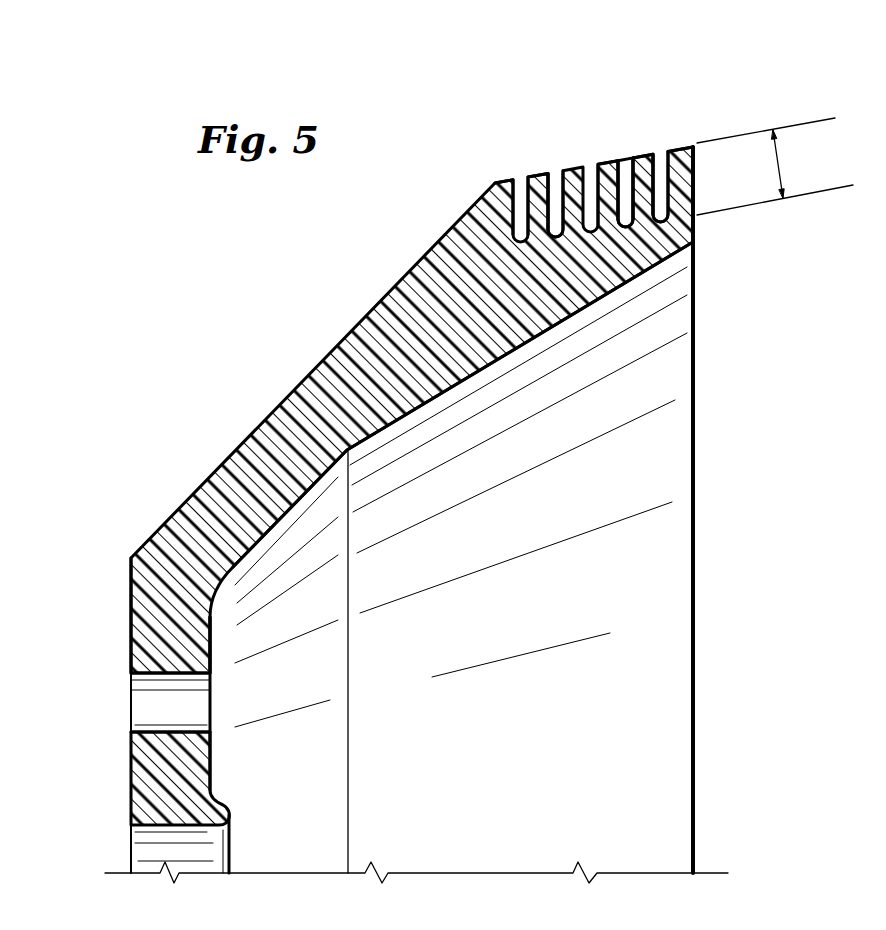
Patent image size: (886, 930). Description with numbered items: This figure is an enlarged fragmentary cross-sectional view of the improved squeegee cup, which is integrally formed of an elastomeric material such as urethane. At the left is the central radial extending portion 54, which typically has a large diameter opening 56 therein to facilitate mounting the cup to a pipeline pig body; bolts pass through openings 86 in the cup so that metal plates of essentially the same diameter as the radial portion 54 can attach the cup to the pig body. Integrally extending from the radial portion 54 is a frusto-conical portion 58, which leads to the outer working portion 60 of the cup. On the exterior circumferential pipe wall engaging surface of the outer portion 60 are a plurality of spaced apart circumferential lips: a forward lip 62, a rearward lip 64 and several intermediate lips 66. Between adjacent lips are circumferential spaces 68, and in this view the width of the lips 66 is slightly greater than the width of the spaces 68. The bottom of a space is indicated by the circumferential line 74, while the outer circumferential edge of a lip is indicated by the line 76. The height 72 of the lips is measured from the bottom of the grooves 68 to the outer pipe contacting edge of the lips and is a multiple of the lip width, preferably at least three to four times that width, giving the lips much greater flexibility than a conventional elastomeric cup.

The central radial extending portion 54 is at (168, 623).
The large diameter opening 56 is at (162, 830).
The frusto-conical portion 58 is at (395, 338).
The outer working portion 60 is at (600, 299).
The forward lip 62 is at (494, 185).
The rearward lip 64 is at (690, 146).
The intermediate lips 66 is at (538, 173).
The circumferential spaces 68 is at (557, 187).
The height of the lips 72 is at (780, 164).
The bottom of a space 74 is at (662, 220).
The outer circumferential edge of a circumferential lip 76 is at (640, 158).
The openings 86 is at (160, 675).